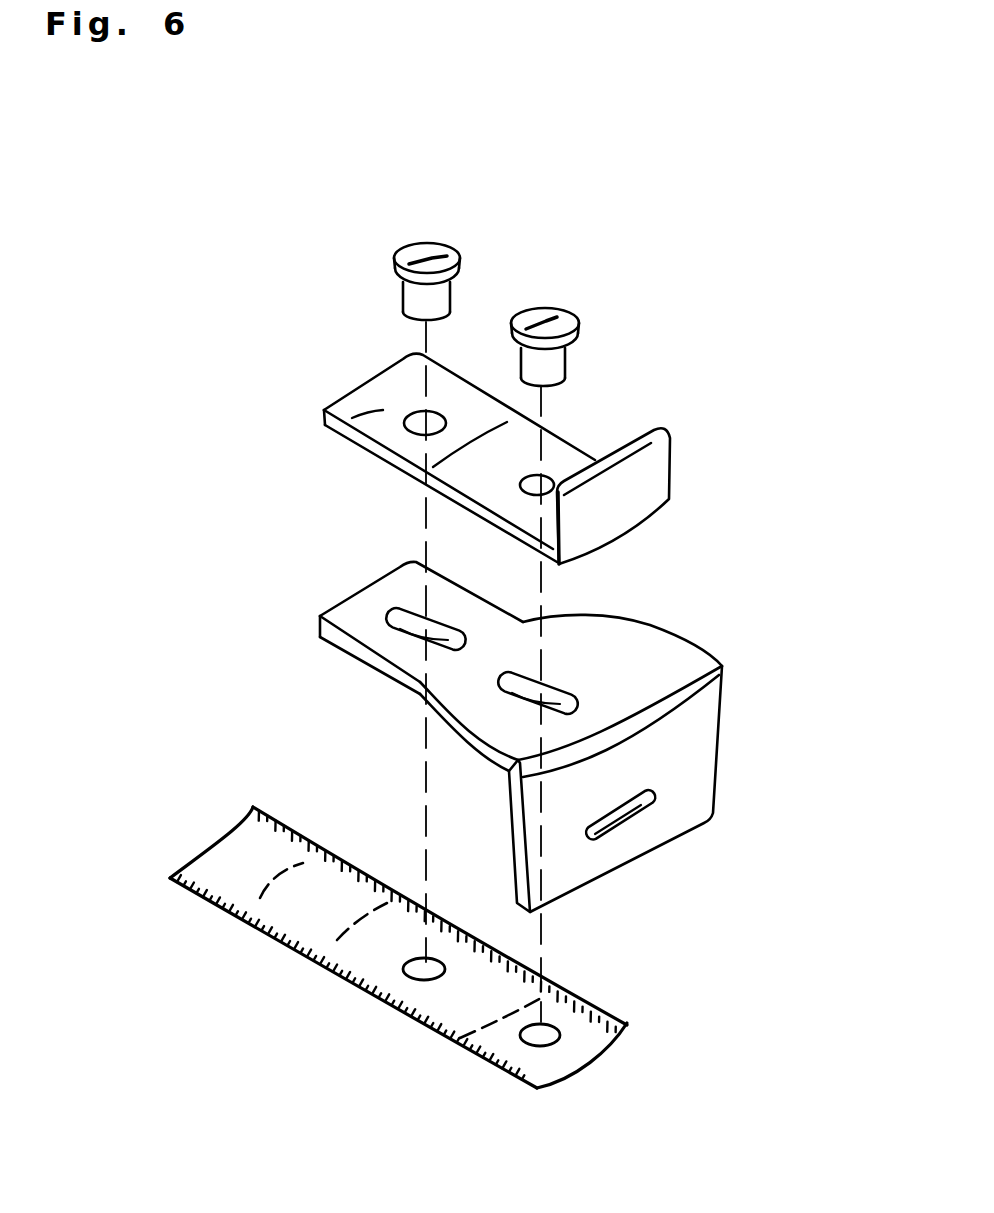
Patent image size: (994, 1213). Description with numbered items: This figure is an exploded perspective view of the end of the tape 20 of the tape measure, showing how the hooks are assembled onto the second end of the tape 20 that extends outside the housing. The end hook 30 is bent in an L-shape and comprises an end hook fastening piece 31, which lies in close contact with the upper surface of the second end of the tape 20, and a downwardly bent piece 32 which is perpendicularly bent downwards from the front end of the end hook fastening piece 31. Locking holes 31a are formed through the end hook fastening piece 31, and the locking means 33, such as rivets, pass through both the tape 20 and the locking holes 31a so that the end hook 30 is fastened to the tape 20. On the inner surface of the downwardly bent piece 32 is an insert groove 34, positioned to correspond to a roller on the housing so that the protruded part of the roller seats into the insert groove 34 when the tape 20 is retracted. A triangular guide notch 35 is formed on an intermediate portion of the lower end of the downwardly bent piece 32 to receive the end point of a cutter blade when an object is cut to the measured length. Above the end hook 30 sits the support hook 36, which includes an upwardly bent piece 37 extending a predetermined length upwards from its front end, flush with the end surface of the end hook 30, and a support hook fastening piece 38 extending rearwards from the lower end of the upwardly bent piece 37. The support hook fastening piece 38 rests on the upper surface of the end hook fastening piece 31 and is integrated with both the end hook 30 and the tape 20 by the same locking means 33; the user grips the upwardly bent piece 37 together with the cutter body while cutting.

The tape 20 is at (228, 848).
The end hook 30 is at (548, 765).
The end hook fastening piece 31 is at (489, 630).
The locking hole 31a is at (524, 698).
The downwardly bent piece 32 is at (708, 830).
The locking means 33 is at (452, 253).
The insert groove 34 is at (514, 877).
The triangular guide notch 35 is at (623, 848).
The support hook 36 is at (526, 434).
The upwardly bent piece 37 is at (648, 463).
The support hook fastening piece 38 is at (356, 410).